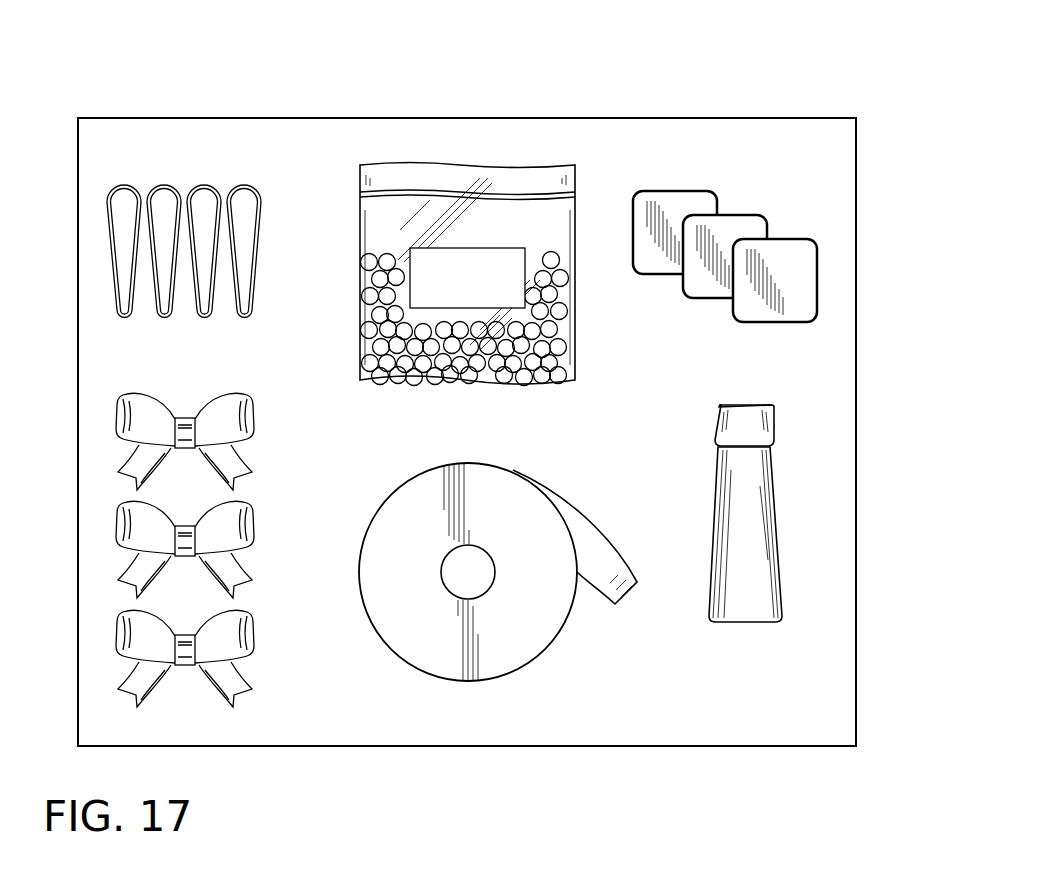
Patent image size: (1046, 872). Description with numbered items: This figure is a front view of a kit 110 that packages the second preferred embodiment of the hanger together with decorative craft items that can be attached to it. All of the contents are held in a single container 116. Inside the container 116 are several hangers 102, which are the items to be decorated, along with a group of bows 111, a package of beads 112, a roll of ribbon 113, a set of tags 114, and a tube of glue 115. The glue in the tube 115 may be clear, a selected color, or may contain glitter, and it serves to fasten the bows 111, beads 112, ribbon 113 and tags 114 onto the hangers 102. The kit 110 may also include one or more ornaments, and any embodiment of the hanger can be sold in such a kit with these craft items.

The kit 110 is at (200, 93).
The hangers 102 is at (112, 232).
The bows 111 is at (123, 643).
The package of beads 112 is at (520, 180).
The roll of ribbon 113 is at (479, 670).
The tags 114 is at (808, 272).
The tube of glue 115 is at (770, 500).
The container 116 is at (706, 146).